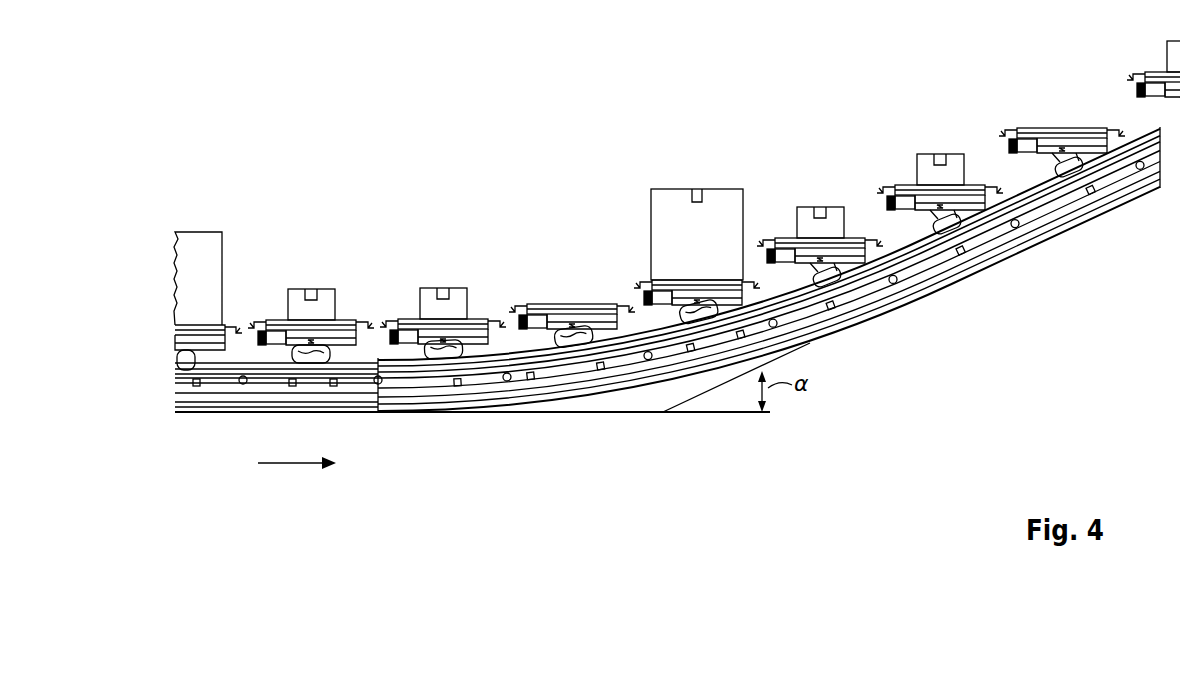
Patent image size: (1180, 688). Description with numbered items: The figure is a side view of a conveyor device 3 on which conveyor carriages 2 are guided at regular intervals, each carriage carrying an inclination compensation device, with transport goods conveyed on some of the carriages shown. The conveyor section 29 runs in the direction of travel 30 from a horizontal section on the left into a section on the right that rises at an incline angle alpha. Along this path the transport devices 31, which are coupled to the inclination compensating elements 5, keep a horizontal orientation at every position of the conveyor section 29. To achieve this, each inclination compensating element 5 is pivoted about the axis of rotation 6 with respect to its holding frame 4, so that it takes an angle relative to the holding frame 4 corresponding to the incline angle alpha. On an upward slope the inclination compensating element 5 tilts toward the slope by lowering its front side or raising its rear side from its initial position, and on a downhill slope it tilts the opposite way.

The conveyor carriage 2 is at (1024, 188).
The conveyor device 3 is at (838, 62).
The holding frame 4 is at (1052, 160).
The inclination compensating element 5 is at (1098, 146).
The axis of rotation 6 is at (1061, 157).
The conveyor section 29 is at (967, 258).
The direction of travel 30 is at (291, 466).
The transport device 31 is at (785, 234).